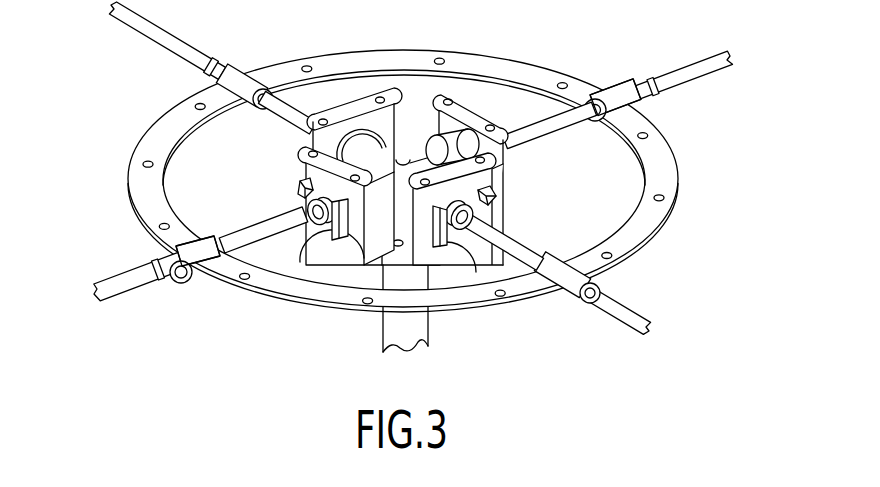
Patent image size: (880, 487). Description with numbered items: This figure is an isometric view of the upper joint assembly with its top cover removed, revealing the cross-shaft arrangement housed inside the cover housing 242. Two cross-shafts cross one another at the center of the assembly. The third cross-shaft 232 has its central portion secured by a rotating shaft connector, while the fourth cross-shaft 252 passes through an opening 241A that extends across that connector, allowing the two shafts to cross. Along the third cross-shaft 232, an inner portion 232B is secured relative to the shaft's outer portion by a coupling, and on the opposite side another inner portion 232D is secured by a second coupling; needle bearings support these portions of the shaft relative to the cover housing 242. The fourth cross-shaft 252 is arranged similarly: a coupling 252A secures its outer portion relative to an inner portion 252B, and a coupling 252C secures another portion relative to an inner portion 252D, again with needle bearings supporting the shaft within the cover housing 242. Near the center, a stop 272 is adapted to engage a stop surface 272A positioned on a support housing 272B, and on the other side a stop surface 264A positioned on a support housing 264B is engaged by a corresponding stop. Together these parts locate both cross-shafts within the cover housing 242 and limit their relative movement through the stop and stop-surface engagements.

The third cross-shaft 232 is at (617, 303).
The inner portion of the third cross-shaft 232B is at (510, 247).
The inner portion of the third cross-shaft 232D is at (288, 104).
The opening 241A is at (405, 157).
The cover housing 242 is at (663, 171).
The fourth cross-shaft 252 is at (692, 76).
The coupling 252A is at (608, 98).
The inner portion of the fourth cross-shaft 252B is at (530, 130).
The coupling 252C is at (190, 265).
The inner portion of the fourth cross-shaft 252D is at (264, 233).
The stop surface 264A is at (452, 236).
The support housing 264B is at (478, 180).
The stop 272 is at (312, 250).
The stop surface 272A is at (338, 248).
The support housing 272B is at (305, 174).